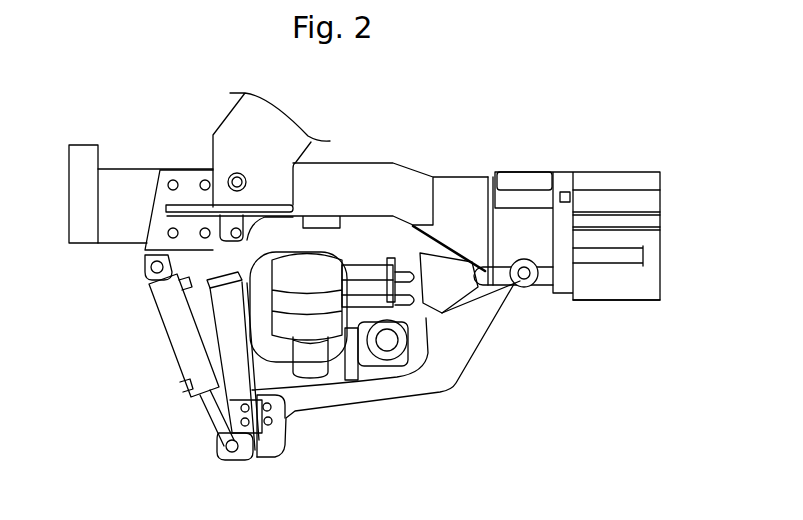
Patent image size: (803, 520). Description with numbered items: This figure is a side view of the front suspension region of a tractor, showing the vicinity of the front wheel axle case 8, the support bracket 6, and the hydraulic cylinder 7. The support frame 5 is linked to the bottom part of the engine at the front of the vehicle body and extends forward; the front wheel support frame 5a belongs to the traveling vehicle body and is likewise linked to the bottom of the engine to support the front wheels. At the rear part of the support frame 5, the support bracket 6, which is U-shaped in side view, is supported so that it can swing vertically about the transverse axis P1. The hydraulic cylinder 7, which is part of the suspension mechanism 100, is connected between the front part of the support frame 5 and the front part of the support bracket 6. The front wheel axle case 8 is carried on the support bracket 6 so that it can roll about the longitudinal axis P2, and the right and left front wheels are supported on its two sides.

The support frame 5 is at (141, 194).
The front wheel support frame 5a is at (410, 167).
The support bracket 6 is at (438, 380).
The hydraulic cylinder 7 is at (177, 328).
The front wheel axle case 8 is at (315, 258).
The suspension mechanism 100 is at (183, 429).
The transverse axis P1 is at (532, 292).
The longitudinal axis P2 is at (429, 285).